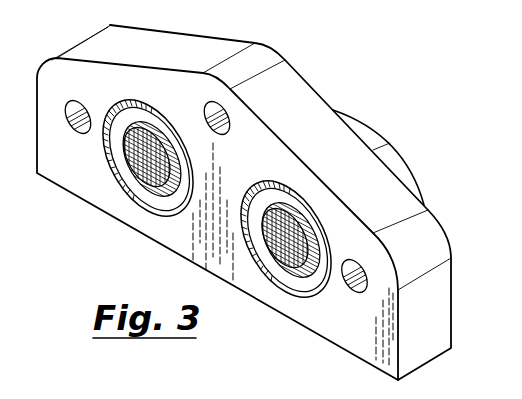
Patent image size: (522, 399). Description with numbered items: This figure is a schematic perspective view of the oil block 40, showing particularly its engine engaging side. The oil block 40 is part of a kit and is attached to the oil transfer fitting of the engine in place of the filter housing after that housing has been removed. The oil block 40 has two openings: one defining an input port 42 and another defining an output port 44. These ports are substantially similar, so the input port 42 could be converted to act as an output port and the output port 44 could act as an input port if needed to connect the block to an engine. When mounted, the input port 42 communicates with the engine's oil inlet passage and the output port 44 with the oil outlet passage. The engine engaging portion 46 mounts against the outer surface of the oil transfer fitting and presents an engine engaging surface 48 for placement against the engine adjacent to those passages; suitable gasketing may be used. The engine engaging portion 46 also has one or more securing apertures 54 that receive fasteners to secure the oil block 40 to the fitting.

The oil block 40 is at (318, 62).
The input port 42 is at (148, 162).
The output port 44 is at (289, 250).
The engine engaging portion 46 is at (373, 323).
The engine engaging surface 48 is at (227, 220).
The securing aperture 54 is at (211, 112).